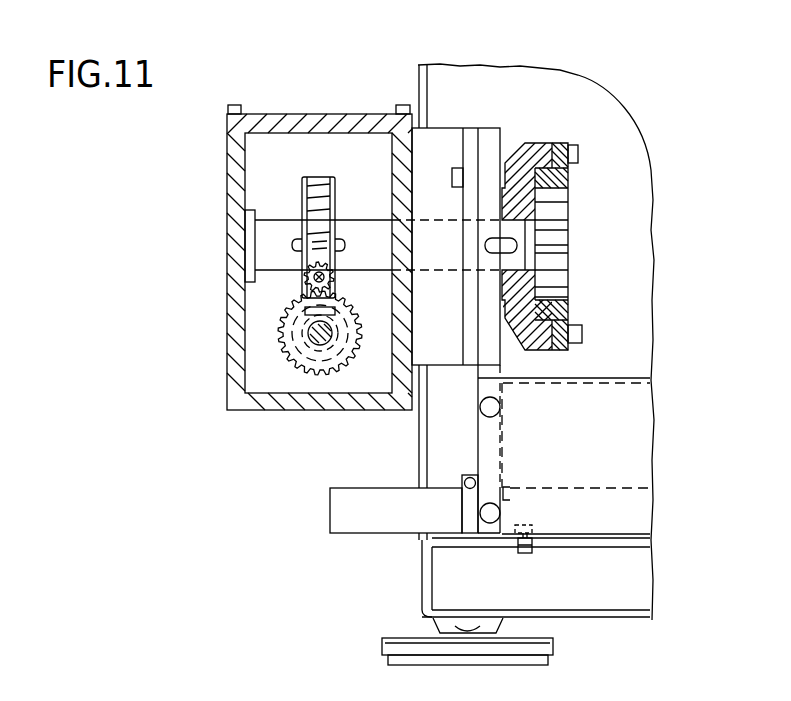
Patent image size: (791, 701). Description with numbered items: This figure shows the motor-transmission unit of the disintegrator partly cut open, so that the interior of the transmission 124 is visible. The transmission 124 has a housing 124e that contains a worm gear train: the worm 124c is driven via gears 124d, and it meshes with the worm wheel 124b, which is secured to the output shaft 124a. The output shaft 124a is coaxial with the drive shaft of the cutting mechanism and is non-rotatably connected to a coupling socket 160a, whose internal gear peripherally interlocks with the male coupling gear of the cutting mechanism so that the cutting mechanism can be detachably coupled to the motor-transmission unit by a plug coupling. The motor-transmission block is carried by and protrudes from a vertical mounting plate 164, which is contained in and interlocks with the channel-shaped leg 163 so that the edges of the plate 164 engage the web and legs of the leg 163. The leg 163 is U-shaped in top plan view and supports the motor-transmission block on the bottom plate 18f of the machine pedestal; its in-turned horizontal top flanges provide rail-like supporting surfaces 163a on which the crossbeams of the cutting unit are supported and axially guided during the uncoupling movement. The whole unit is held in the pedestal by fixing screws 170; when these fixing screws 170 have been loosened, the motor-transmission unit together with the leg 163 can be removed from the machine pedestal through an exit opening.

The transmission 124 is at (272, 412).
The output shaft 124a is at (375, 230).
The worm wheel 124b is at (315, 190).
The worm 124c is at (290, 338).
The gears 124d is at (283, 322).
The housing 124e is at (233, 192).
The vertical mounting plate 164 is at (486, 145).
The coupling socket 160a is at (530, 138).
The leg 163 is at (600, 395).
The supporting surfaces 163a is at (597, 407).
The fixing screws 170 is at (532, 548).
The bottom plate 18f is at (620, 543).